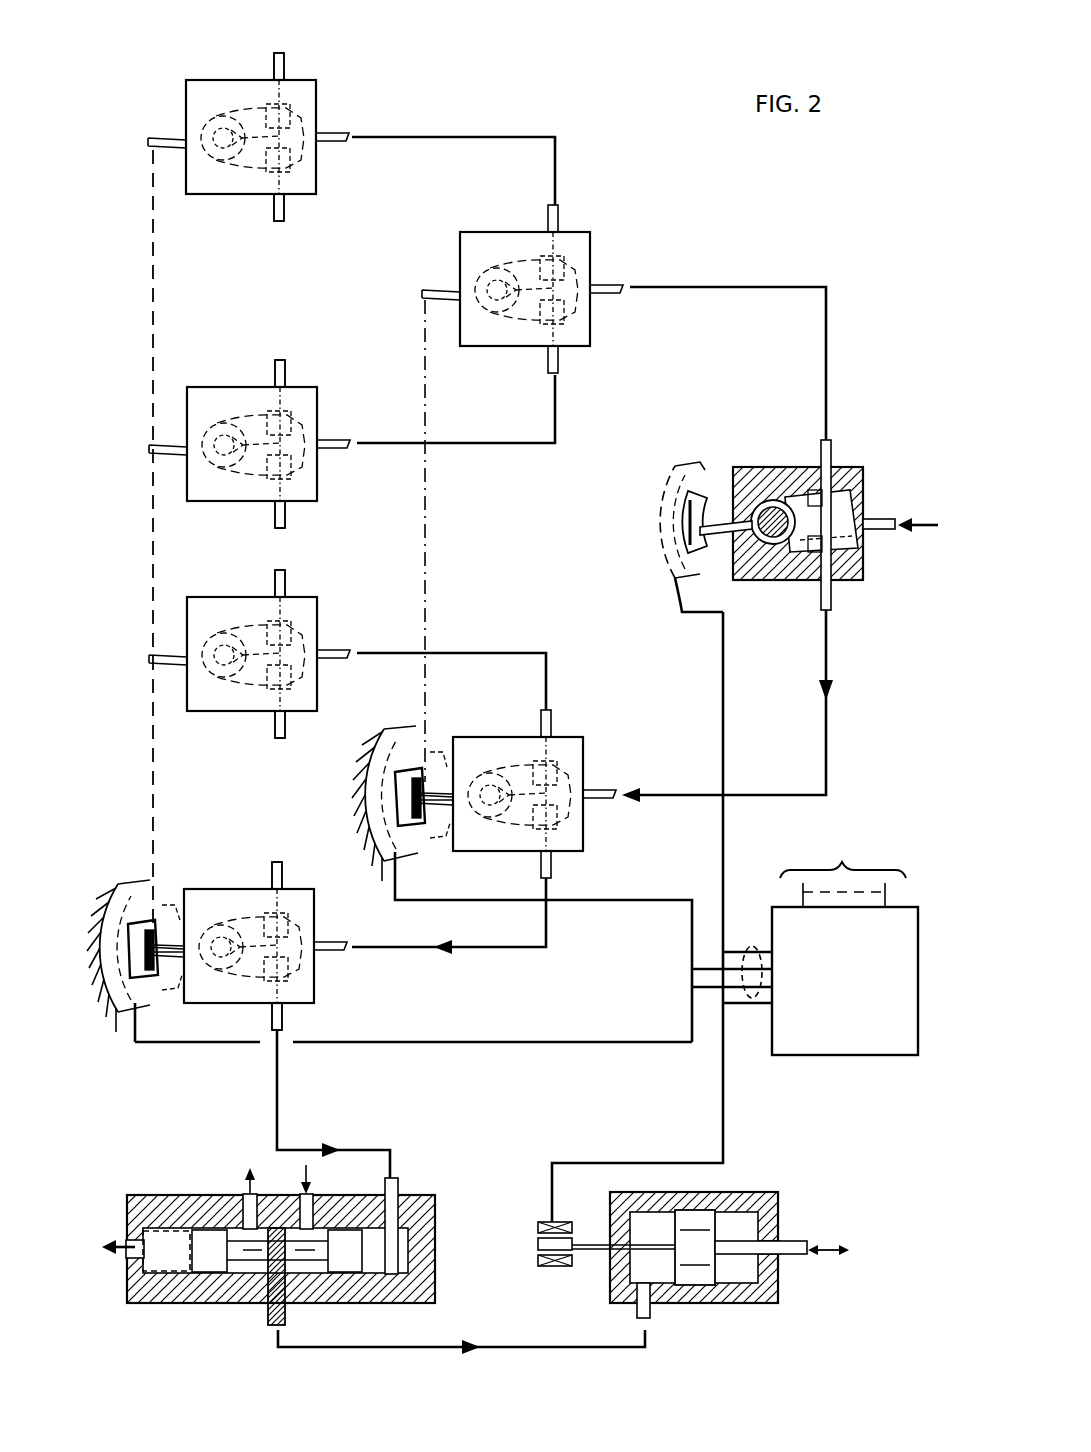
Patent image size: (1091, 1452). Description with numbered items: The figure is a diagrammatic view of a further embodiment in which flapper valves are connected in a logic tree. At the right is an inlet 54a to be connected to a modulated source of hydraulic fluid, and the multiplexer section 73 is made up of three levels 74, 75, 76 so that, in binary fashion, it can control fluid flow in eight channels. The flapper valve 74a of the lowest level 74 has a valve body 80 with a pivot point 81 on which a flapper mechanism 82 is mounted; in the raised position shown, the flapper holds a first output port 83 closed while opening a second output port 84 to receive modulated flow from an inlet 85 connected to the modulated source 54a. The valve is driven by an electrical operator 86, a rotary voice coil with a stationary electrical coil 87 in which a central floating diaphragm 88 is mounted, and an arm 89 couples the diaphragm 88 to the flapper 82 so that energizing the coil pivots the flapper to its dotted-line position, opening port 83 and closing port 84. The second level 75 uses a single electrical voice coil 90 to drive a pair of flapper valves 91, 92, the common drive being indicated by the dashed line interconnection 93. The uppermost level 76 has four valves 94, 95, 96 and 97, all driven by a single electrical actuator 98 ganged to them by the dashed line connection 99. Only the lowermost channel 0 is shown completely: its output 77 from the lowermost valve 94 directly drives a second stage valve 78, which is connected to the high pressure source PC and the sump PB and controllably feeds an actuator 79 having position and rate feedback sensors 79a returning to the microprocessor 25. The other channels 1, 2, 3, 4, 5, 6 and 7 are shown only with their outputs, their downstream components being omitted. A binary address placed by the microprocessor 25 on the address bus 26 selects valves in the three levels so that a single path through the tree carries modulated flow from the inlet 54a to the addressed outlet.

The multiplexer section 73 is at (578, 60).
The first level 74 is at (812, 268).
The flapper valve 74a is at (832, 470).
The second level 75 is at (607, 153).
The third level 76 is at (160, 76).
The output 77 is at (271, 1022).
The second stage valve 78 is at (418, 1193).
The actuator 79 is at (778, 1198).
The position and rate feedback sensors 79a is at (546, 1268).
The valve body 80 is at (762, 474).
The pivot point 81 is at (770, 545).
The flapper mechanism 82 is at (806, 490).
The first output port 83 is at (850, 505).
The second output port 84 is at (830, 540).
The inlet 85 is at (878, 520).
The inlet 54a is at (934, 513).
The electrical operator 86 is at (672, 472).
The stationary electrical coil 87 is at (695, 472).
The central floating diaphragm 88 is at (686, 524).
The arm 89 is at (728, 566).
The electrical voice coil 90 is at (398, 745).
The flapper valve 91 is at (488, 737).
The flapper valve 92 is at (592, 244).
The dashed line interconnection 93 is at (430, 508).
The flapper valve 94 is at (314, 905).
The flapper valve 95 is at (316, 610).
The flapper valve 96 is at (317, 400).
The flapper valve 97 is at (317, 90).
The electrical actuator 98 is at (123, 900).
The dashed line connection 99 is at (150, 772).
The microprocessor 25 is at (865, 1056).
The address bus 26 is at (748, 946).
The channel 0 is at (288, 1022).
The channel 1 is at (280, 863).
The channel 2 is at (279, 738).
The channel 3 is at (283, 577).
The channel 4 is at (283, 528).
The channel 5 is at (283, 362).
The channel 6 is at (280, 222).
The channel 7 is at (282, 53).